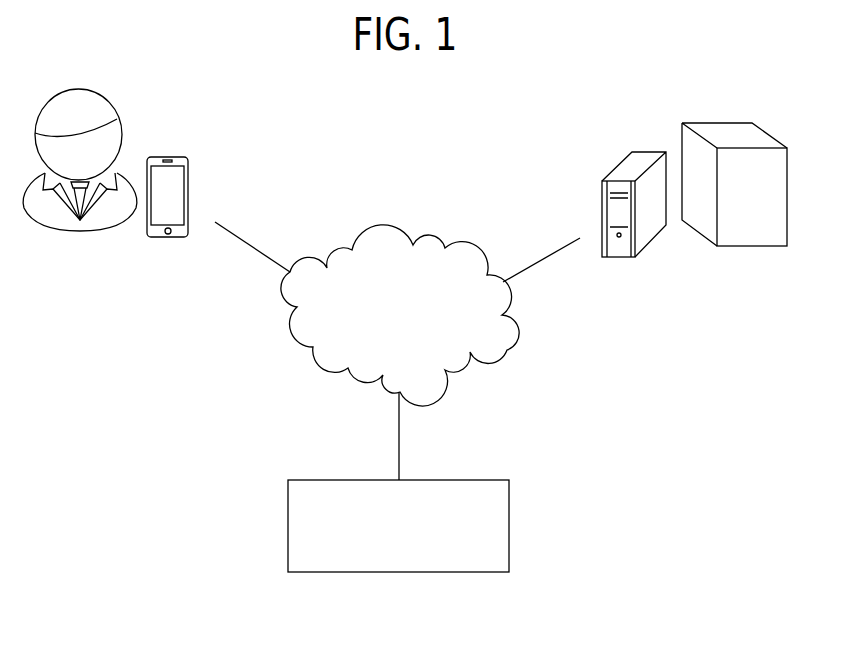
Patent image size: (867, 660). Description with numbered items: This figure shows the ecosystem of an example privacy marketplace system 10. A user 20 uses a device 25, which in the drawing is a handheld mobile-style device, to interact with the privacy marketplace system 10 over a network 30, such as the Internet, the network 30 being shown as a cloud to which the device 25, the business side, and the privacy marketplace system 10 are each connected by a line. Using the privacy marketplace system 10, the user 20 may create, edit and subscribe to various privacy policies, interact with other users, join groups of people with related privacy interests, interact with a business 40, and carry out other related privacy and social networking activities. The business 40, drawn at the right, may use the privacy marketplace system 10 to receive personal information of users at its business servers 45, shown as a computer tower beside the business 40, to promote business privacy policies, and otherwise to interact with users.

The privacy marketplace system 10 is at (509, 527).
The user 20 is at (75, 232).
The device 25 is at (167, 240).
The network 30 is at (507, 350).
The business 40 is at (750, 247).
The business servers 45 is at (618, 258).